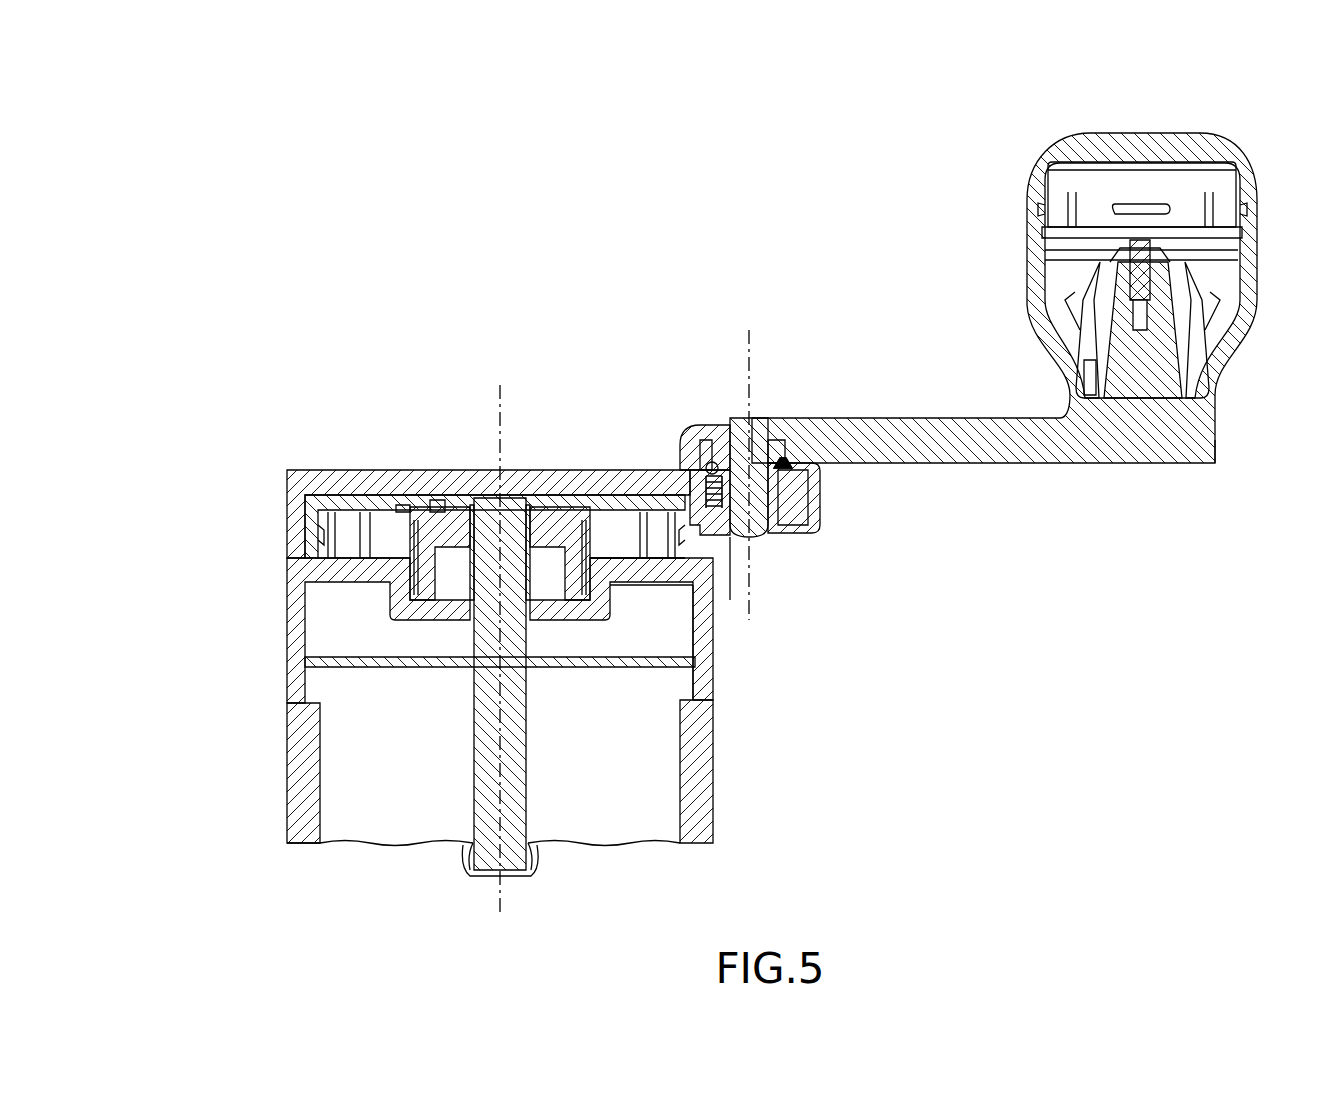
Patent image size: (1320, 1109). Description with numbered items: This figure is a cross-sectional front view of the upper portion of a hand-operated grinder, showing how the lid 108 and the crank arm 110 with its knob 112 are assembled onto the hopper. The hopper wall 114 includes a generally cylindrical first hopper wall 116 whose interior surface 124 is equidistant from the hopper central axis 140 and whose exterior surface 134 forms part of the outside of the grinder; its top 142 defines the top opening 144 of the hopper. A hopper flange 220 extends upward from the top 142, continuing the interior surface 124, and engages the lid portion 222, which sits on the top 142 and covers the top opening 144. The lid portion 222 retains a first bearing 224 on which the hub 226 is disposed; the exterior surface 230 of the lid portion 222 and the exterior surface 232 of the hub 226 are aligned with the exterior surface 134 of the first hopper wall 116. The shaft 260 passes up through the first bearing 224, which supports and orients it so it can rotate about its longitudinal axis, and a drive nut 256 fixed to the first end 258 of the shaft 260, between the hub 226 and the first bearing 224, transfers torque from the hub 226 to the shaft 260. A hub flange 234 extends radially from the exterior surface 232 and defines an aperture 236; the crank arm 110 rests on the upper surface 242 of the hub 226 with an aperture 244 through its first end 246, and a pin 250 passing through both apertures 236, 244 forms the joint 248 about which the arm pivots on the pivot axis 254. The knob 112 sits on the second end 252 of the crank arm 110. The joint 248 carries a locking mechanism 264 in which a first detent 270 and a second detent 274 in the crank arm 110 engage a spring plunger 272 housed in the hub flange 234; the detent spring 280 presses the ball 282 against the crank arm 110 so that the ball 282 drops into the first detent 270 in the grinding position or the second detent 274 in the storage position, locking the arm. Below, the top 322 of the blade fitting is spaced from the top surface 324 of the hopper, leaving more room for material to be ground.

The lid 108 is at (540, 228).
The crank arm 110 is at (1004, 291).
The knob 112 is at (1145, 140).
The hopper wall 114 is at (430, 776).
The first hopper wall 116 is at (458, 776).
The interior surface 124 is at (305, 762).
The exterior surface 134 is at (286, 808).
The hopper central axis 140 is at (540, 614).
The top 142 is at (715, 697).
The top opening 144 is at (710, 652).
The hopper flange 220 is at (305, 668).
The lid portion 222 is at (476, 625).
The first bearing 224 is at (400, 490).
The hub 226 is at (312, 520).
The exterior surface 230 is at (287, 596).
The exterior surface 232 is at (287, 480).
The hub flange 234 is at (820, 495).
The aperture 236 is at (800, 525).
The upper surface 242 is at (680, 475).
The aperture 244 is at (790, 455).
The first end 246 is at (700, 455).
The joint 248 is at (790, 557).
The pin 250 is at (742, 440).
The second end 252 is at (1160, 440).
The pivot axis 254 is at (752, 590).
The drive nut 256 is at (434, 508).
The first end 258 is at (495, 520).
The shaft 260 is at (515, 832).
The locking mechanism 264 is at (721, 388).
The first detent 270 is at (715, 468).
The spring plunger 272 is at (690, 530).
The second detent 274 is at (776, 470).
The detent spring 280 is at (695, 582).
The ball 282 is at (680, 455).
The top 322 is at (540, 852).
The top surface 324 is at (300, 704).